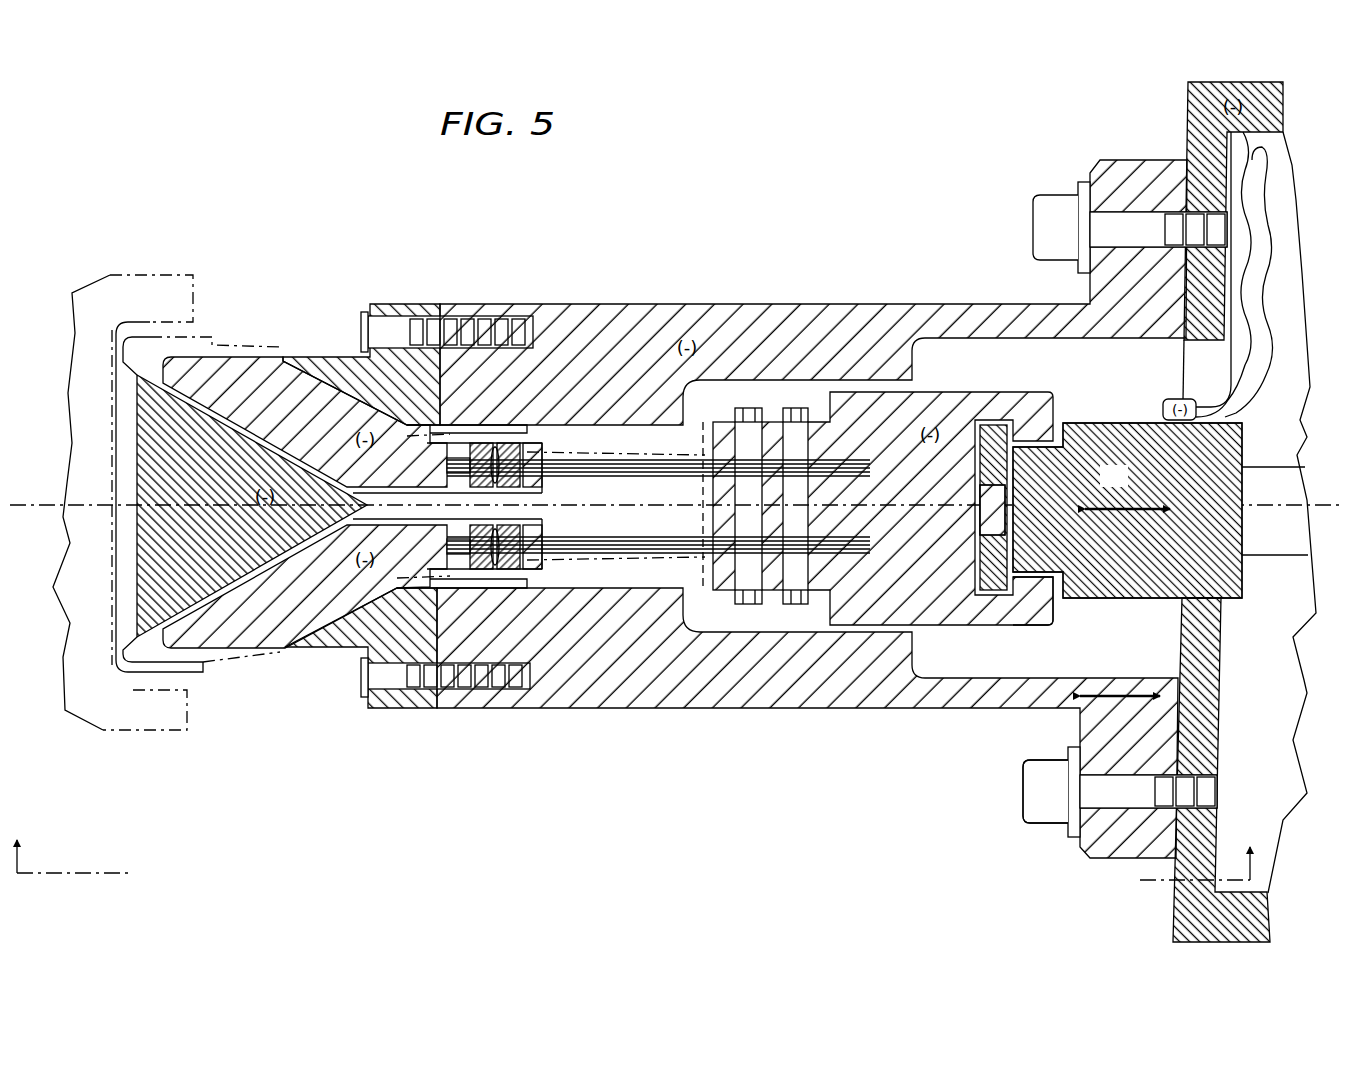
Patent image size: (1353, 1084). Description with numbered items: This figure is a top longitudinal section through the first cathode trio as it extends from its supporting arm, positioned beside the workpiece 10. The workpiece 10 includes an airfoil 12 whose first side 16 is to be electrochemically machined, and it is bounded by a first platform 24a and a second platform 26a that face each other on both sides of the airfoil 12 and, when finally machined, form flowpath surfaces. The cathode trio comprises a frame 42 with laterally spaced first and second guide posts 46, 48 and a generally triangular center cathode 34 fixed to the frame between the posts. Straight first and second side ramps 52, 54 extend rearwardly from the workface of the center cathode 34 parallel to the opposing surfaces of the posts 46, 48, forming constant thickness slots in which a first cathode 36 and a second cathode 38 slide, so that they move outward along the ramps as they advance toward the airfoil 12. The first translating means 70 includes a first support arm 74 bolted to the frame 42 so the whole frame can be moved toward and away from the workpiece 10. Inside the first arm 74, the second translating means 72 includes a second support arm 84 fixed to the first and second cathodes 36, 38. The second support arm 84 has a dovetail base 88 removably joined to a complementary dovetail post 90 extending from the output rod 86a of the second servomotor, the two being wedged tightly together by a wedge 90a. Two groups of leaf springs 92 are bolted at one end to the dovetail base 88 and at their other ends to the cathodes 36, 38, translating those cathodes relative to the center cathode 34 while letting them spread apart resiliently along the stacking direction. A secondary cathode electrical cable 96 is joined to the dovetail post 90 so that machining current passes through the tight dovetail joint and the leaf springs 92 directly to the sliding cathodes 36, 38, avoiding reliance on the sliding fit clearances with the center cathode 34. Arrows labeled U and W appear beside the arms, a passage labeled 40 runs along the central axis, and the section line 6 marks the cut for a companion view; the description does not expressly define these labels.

The workpiece 10 is at (147, 262).
The airfoil 12 is at (80, 447).
The first side 16 is at (112, 560).
The first platform 24a is at (193, 308).
The second platform 26a is at (140, 690).
The center cathode 34 is at (252, 506).
The first cathode 36 is at (352, 425).
The second cathode 38 is at (352, 583).
The central bore 40 is at (588, 510).
The frame 42 is at (400, 292).
The first guide post 46 is at (320, 356).
The second guide post 48 is at (330, 650).
The first side ramp 52 is at (213, 360).
The second side ramp 54 is at (222, 650).
The first translating means 70 is at (1012, 805).
The second translating means 72 is at (1068, 625).
The first support arm 74 is at (652, 708).
The second support arm 84 is at (968, 384).
The output rod 86a is at (1290, 462).
The dovetail base 88 is at (997, 627).
The dovetail post 90 is at (1127, 600).
The wedge 90a is at (981, 530).
The leaf springs 92 is at (657, 478).
The secondary cathode electrical cable 96 is at (1290, 252).
The section line 6- 6 is at (633, 848).
The displacement U is at (1125, 690).
The displacement W is at (1130, 497).